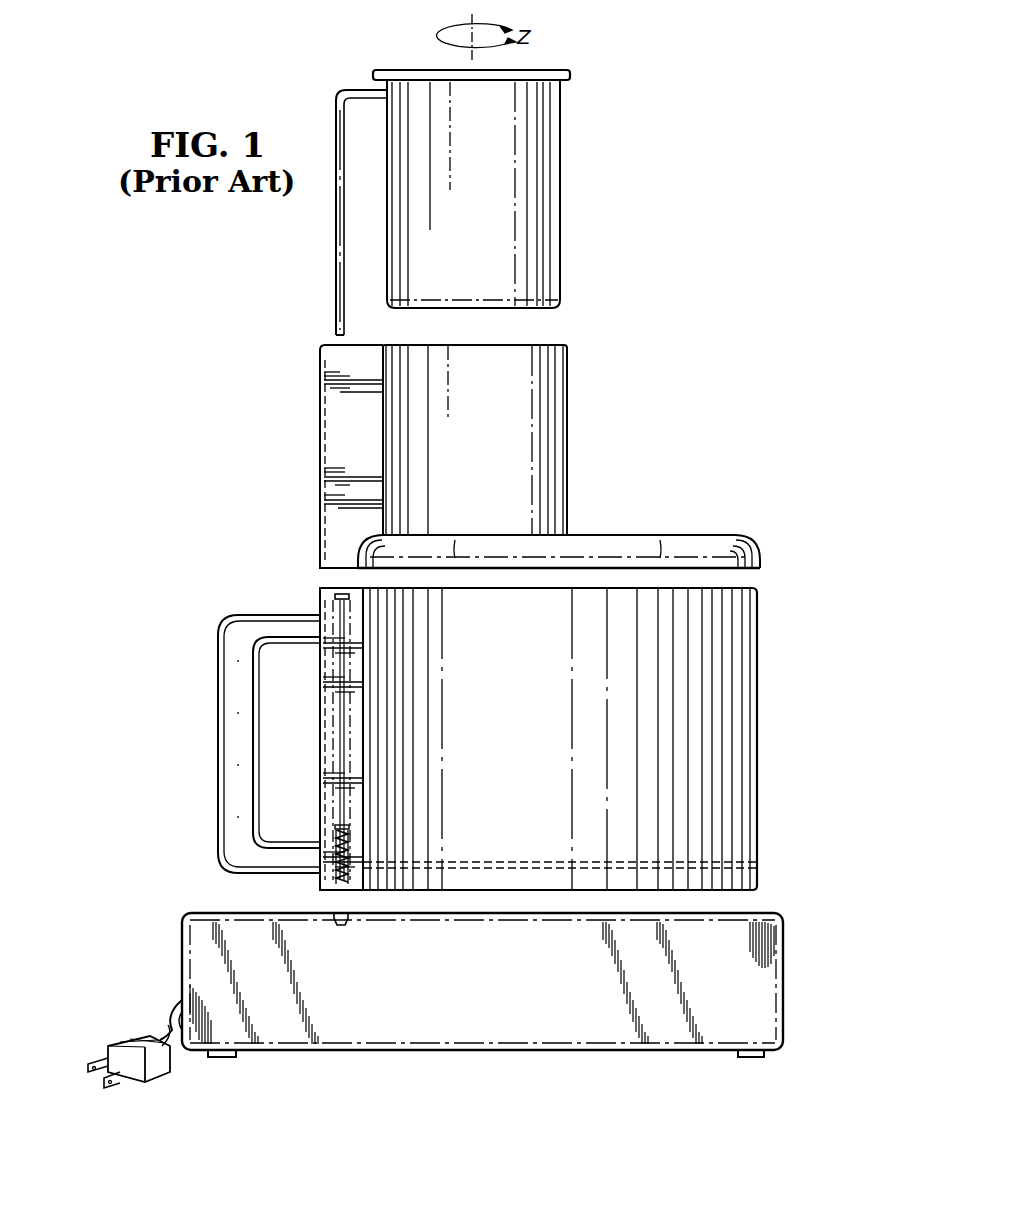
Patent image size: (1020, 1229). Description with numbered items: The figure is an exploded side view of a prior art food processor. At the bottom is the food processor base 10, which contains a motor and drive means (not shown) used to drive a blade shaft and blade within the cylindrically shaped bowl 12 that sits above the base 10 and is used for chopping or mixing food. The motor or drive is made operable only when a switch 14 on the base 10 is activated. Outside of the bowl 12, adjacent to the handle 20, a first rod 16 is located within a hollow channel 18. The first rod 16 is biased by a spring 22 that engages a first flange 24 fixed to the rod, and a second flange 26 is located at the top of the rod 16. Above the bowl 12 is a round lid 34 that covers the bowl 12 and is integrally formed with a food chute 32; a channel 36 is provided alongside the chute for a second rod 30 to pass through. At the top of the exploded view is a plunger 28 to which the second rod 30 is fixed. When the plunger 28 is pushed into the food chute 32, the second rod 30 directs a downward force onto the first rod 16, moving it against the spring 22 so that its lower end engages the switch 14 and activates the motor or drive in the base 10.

The food processor base 10 is at (182, 976).
The bowl 12 is at (757, 662).
The switch 14 is at (341, 925).
The first rod 16 is at (338, 715).
The hollow channel 18 is at (332, 755).
The handle 20 is at (218, 640).
The spring 22 is at (340, 870).
The first flange 24 is at (338, 828).
The second flange 26 is at (338, 594).
The plunger 28 is at (563, 176).
The second rod 30 is at (340, 272).
The food chute 32 is at (567, 447).
The round lid 34 is at (655, 533).
The channel 36 is at (337, 440).